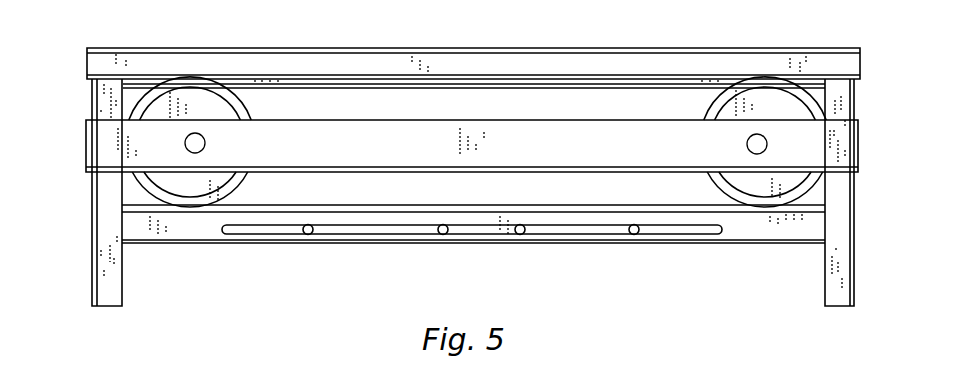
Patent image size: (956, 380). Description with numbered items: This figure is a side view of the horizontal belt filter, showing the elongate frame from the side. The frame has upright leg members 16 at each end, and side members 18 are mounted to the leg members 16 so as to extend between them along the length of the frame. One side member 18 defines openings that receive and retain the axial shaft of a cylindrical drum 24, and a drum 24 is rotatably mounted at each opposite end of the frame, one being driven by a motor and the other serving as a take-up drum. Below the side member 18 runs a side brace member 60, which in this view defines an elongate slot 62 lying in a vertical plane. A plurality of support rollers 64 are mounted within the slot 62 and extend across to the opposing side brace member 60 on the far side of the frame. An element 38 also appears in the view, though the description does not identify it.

The upright leg member 16 is at (105, 279).
The side member 18 is at (508, 70).
The cylindrical drum 24 is at (212, 110).
The axle bar 38 is at (360, 80).
The side brace member 60 is at (193, 228).
The elongate slot 62 is at (412, 230).
The support roller 64 is at (442, 224).